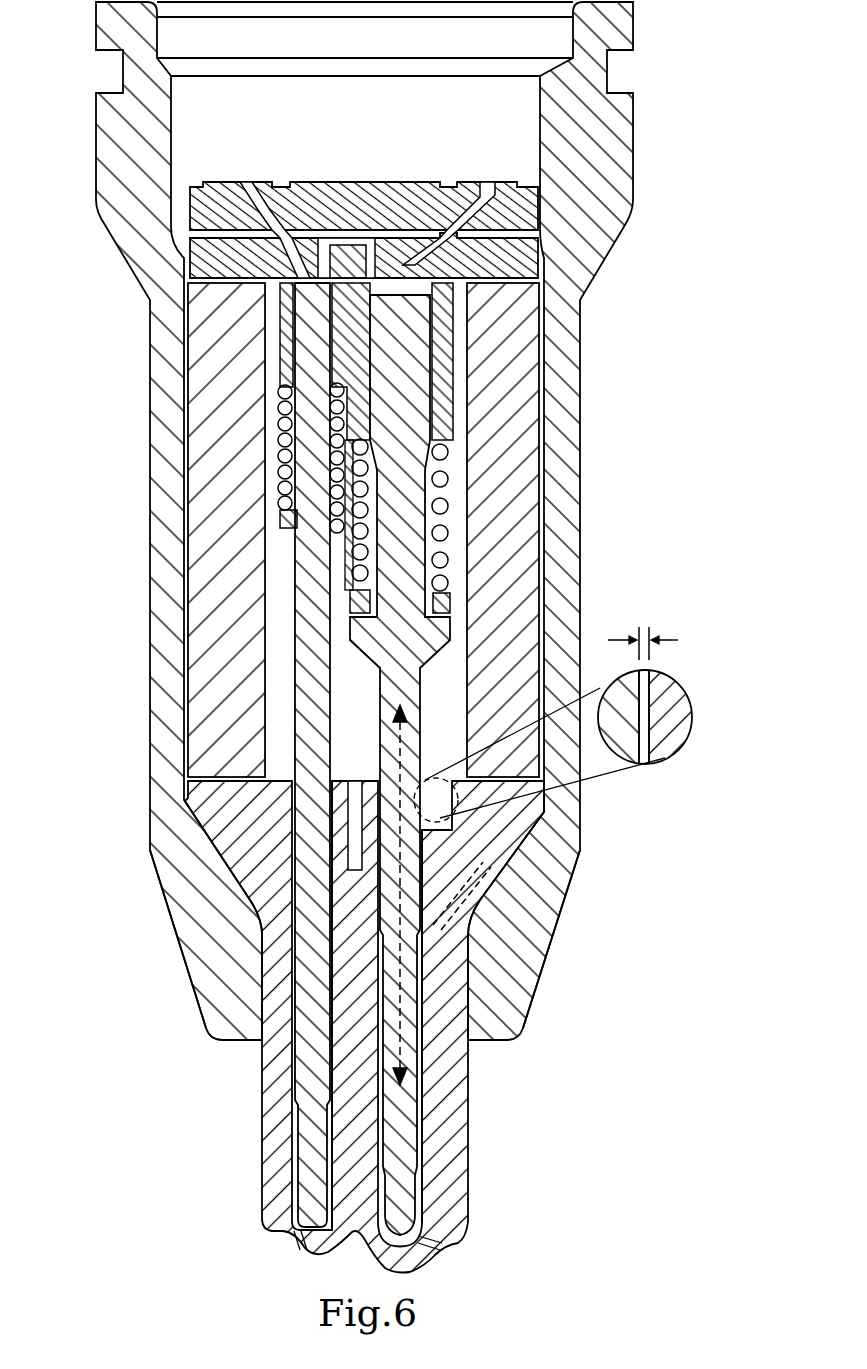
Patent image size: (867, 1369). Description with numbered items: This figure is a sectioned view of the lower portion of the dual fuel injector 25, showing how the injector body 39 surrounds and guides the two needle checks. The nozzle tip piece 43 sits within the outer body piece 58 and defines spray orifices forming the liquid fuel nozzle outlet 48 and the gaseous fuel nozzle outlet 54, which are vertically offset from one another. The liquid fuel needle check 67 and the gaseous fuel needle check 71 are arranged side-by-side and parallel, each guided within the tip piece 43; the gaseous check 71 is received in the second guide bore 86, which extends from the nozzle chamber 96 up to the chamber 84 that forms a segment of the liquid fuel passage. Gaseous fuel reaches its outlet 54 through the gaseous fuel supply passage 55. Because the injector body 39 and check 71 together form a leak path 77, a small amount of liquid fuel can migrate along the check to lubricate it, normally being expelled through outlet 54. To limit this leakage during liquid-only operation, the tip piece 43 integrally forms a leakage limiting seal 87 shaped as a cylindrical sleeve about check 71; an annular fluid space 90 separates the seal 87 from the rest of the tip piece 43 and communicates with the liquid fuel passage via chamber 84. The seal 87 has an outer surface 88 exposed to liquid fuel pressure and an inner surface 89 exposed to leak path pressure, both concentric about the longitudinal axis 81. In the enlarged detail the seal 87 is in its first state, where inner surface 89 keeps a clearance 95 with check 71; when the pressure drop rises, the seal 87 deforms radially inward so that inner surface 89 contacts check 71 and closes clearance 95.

The fuel injector 25 is at (53, 102).
The injector body 39 is at (150, 432).
The outer body piece 58 is at (152, 886).
The gaseous fuel supply passage 55 is at (523, 993).
The chamber 84 is at (272, 597).
The liquid fuel needle check 67 is at (307, 1128).
The nozzle tip piece 43 is at (262, 1079).
The annular fluid space 90 is at (352, 780).
The second guide bore 86 is at (345, 888).
The liquid fuel nozzle outlet 48 is at (292, 1237).
The gaseous fuel nozzle outlet 54 is at (432, 1243).
The gaseous fuel needle check 71 is at (617, 688).
The leakage limiting seal 87 is at (673, 688).
The leak path 77 is at (645, 766).
The clearance 95 is at (645, 631).
The outer surface 88 is at (440, 833).
The inner surface 89 is at (660, 745).
The longitudinal axis 81 is at (402, 1050).
The nozzle chamber 96 is at (428, 1100).